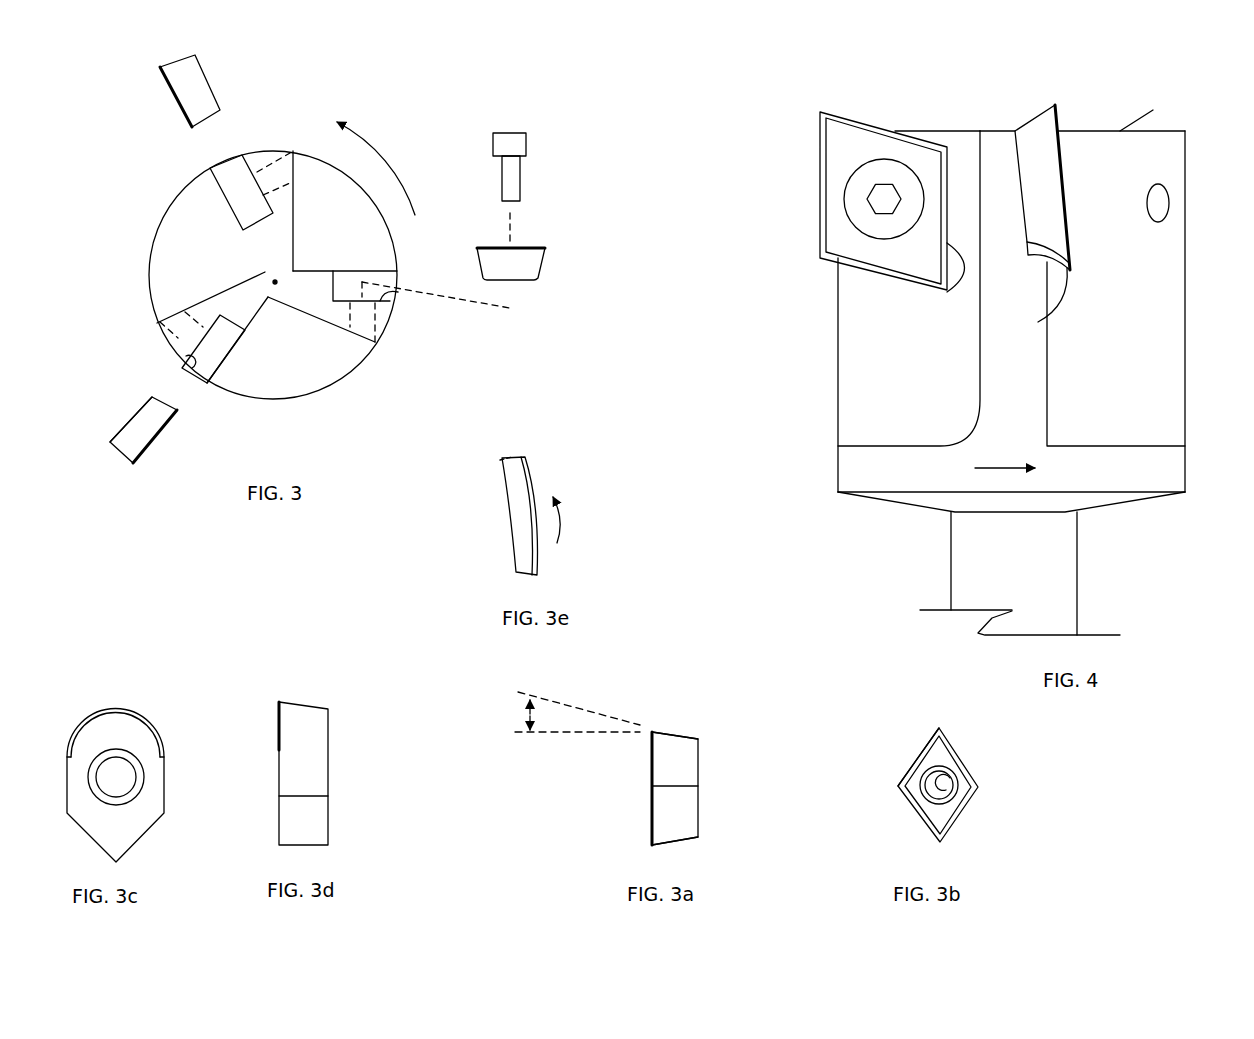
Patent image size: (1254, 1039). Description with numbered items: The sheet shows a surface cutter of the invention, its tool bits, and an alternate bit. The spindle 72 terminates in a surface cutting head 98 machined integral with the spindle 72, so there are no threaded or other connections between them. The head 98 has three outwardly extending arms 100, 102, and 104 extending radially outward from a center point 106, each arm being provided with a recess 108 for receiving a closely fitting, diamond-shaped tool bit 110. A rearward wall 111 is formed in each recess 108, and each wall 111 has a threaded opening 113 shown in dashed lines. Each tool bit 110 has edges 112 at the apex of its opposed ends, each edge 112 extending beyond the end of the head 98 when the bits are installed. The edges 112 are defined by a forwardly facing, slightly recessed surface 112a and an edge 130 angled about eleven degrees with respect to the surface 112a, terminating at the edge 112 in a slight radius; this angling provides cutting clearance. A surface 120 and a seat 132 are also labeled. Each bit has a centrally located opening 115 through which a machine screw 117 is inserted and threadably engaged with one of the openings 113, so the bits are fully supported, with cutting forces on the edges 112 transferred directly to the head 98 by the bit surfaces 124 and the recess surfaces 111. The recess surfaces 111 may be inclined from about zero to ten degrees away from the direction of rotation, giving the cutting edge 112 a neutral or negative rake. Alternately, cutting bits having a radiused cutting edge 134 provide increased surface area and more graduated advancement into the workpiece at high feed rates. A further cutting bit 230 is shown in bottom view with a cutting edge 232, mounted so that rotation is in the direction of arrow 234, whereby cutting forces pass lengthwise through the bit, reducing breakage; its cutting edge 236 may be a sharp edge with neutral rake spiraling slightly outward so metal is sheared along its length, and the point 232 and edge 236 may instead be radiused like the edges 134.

In FIG. 4, the spindle 72 is at (1015, 567).
In FIG. 3, the surface cutting head 98 is at (437, 102).
In FIG. 4, the surface cutting head 98 is at (1000, 130).
In FIG. 3, the arm 100 is at (207, 300).
In FIG. 4, the arm 100 is at (1032, 378).
In FIG. 3, the arm 102 is at (268, 148).
In FIG. 4, the arm 102 is at (840, 340).
In FIG. 3, the arm 104 is at (392, 322).
In FIG. 4, the arm 104 is at (1108, 337).
In FIG. 3, the center point 106 is at (277, 280).
In FIG. 3, the recess 108 is at (243, 185).
In FIG. 3, the tool bit 110 is at (213, 68).
In FIG. 3A, the tool bit 110 is at (620, 812).
In FIG. 3B, the tool bit 110 is at (890, 745).
In FIG. 4, the tool bit 110 is at (837, 107).
In FIG. 3, the rearward wall 111 is at (265, 272).
In FIG. 4, the rearward wall 111 is at (1007, 294).
In FIG. 3, the cutting edge 112 is at (160, 67).
In FIG. 3A, the cutting edge 112 is at (655, 732).
In FIG. 3B, the cutting edge 112 is at (937, 727).
In FIG. 4, the cutting edge 112 is at (823, 112).
In FIG. 3B, the recessed surface 112a is at (953, 748).
In FIG. 4, the recessed surface 112a is at (823, 148).
In FIG. 3, the threaded opening 113 is at (175, 337).
In FIG. 4, the threaded opening 113 is at (1158, 213).
In FIG. 3B, the opening 115 is at (945, 782).
In FIG. 3, the machine screw 117 is at (527, 137).
In FIG. 4, the machine screw 117 is at (882, 157).
In FIG. 3A, the top surface 120 is at (698, 739).
In FIG. 3, the bit surface 124 is at (115, 438).
In FIG. 3A, the bit surface 124 is at (698, 812).
In FIG. 3A, the angled edge 130 is at (672, 733).
In FIG. 4, the seat surface 132 is at (968, 131).
In FIG. 3C, the radiused cutting edge 134 is at (120, 708).
In FIG. 3D, the radiused cutting edge 134 is at (279, 702).
In FIG. 3E, the cutting bit 230 is at (563, 486).
In FIG. 3E, the cutting edge 232 is at (523, 457).
In FIG. 3E, the arrow 234 is at (560, 518).
In FIG. 3E, the cutting edge 236 is at (535, 480).